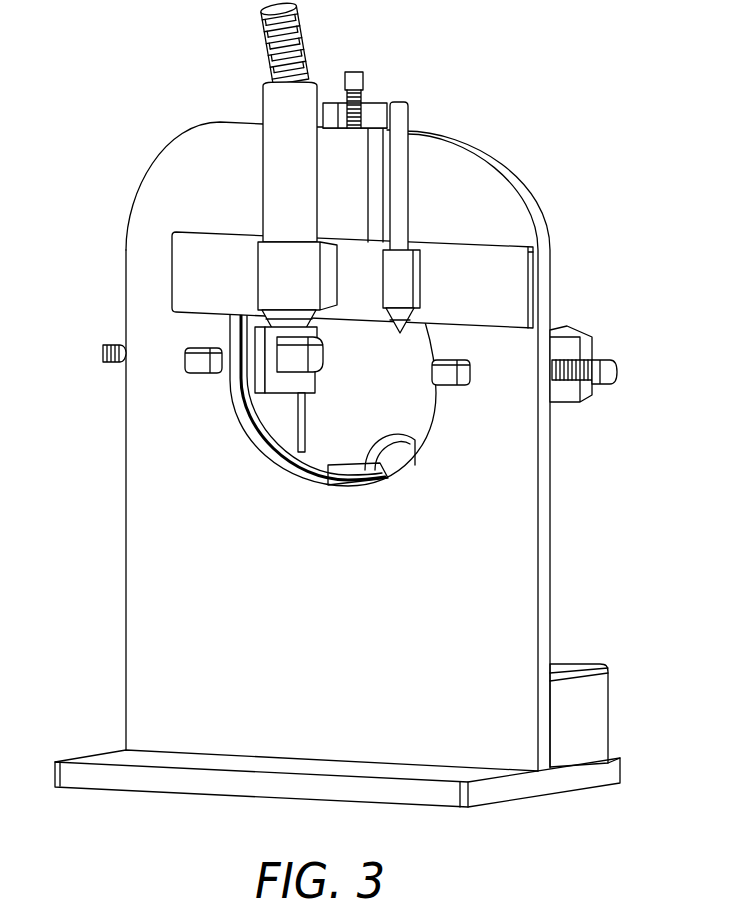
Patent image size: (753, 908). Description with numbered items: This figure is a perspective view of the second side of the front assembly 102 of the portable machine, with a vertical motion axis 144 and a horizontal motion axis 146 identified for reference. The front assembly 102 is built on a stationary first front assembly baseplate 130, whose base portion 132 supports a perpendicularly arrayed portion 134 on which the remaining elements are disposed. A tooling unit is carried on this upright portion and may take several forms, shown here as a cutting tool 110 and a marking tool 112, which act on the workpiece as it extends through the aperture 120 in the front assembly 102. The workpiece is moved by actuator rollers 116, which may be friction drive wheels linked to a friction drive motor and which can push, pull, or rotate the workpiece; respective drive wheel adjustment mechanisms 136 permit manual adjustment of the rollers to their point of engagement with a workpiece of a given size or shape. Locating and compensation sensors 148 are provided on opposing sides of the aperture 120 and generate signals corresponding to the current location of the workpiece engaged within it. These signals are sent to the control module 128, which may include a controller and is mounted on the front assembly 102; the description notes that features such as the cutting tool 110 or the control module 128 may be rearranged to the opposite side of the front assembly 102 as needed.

The front assembly 102 is at (359, 414).
The cutting tool 110 is at (262, 110).
The marking tool 112 is at (410, 125).
The actuator rollers 116 is at (318, 352).
The aperture 120 is at (356, 423).
The control module 128 is at (612, 707).
The first front assembly baseplate 130 is at (126, 572).
The base portion 132 is at (578, 790).
The perpendicularly arrayed portion 134 is at (126, 437).
The drive wheel adjustment mechanisms 136 is at (366, 81).
The vertical motion axis 144 is at (357, 175).
The horizontal motion axis 146 is at (533, 301).
The locating and compensation sensors 148 is at (202, 367).